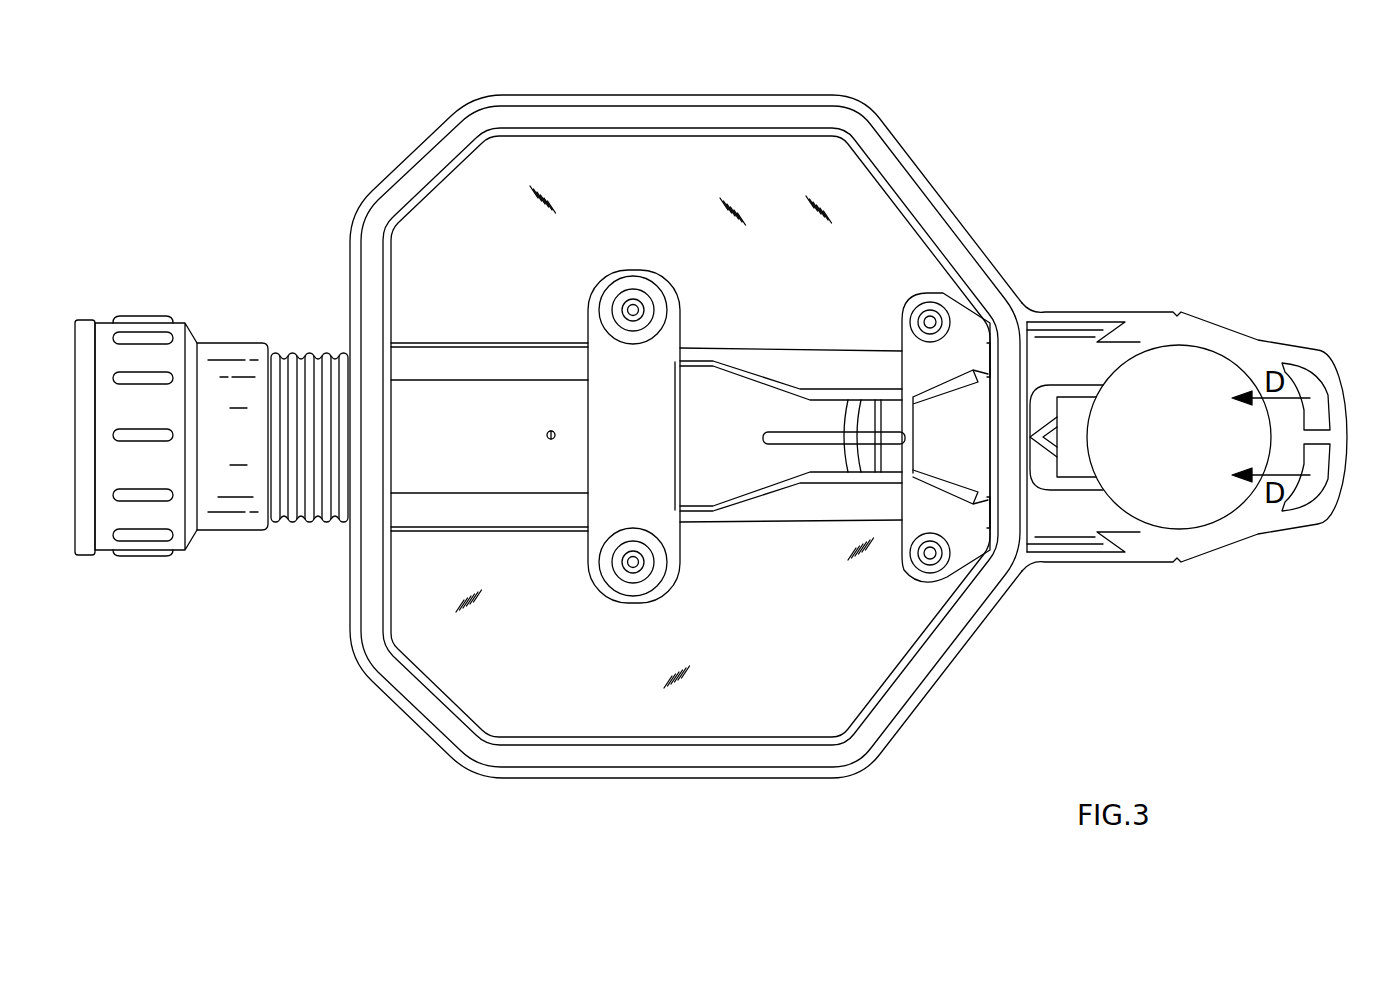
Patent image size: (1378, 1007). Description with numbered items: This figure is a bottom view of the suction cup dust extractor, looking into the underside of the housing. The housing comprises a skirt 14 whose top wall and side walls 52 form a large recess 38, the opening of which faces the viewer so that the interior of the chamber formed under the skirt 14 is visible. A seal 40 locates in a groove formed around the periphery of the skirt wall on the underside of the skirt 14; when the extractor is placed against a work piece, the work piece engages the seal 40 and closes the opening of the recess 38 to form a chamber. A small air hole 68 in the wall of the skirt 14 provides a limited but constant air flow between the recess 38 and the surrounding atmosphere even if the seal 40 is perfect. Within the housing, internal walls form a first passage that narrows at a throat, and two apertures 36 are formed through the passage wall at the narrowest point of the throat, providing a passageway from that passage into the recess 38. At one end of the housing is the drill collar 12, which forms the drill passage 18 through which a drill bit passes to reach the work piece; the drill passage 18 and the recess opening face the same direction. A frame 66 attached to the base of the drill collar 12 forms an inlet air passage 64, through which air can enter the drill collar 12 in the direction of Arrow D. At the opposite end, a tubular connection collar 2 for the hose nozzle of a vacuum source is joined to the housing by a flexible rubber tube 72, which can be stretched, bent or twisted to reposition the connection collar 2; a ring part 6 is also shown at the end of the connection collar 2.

The connection collar 2 is at (106, 540).
The coupling ring 6 is at (84, 542).
The drill collar 12 is at (1198, 558).
The skirt 14 is at (615, 215).
The drill passage 18 is at (1169, 434).
The apertures 36 is at (853, 418).
The recess 38 is at (502, 294).
The seal 40 is at (405, 178).
The side walls 52 is at (353, 222).
The inlet air passage 64 is at (1300, 378).
The frame 66 is at (1322, 425).
The air hole 68 is at (548, 432).
The flexible tube 72 is at (302, 512).